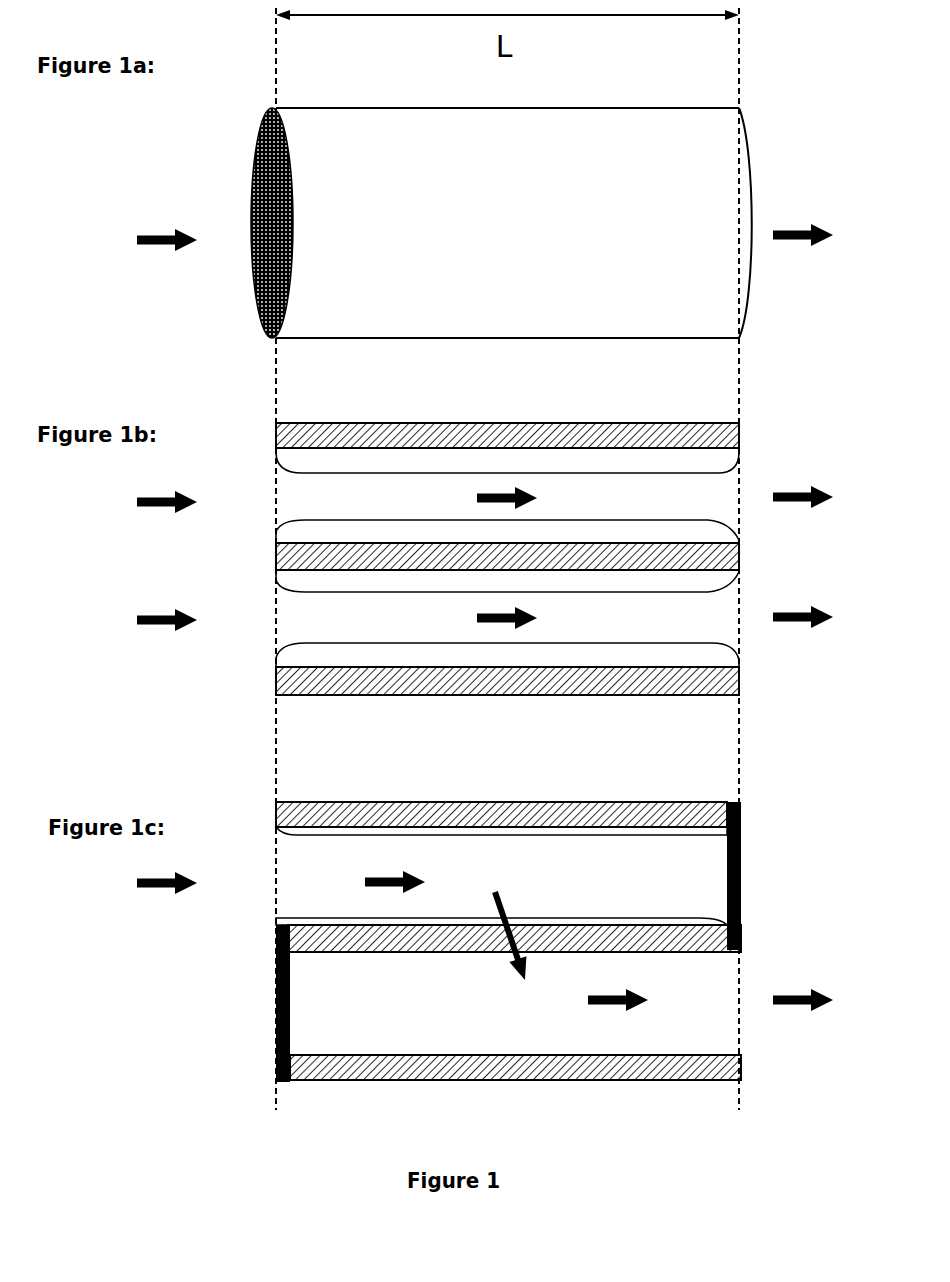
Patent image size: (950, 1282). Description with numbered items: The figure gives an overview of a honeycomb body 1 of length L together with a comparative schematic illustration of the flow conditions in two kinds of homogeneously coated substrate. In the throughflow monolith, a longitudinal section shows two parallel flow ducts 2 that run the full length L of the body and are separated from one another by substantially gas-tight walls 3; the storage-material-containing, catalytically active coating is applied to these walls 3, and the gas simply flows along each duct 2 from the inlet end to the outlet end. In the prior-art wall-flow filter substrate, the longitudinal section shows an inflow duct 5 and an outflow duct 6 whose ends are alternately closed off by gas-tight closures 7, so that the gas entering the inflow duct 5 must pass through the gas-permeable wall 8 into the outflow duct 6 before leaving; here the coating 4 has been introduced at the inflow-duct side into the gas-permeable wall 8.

In FIG. 1A, the honeycomb body 1 is at (501, 223).
In FIG. 1B, the flow ducts 2 is at (457, 560).
In FIG. 1B, the gas-tight walls 3 is at (630, 542).
In FIG. 1B, the coating 4 is at (713, 533).
In FIG. 1C, the coating 4 is at (677, 918).
In FIG. 1C, the inflow duct 5 is at (366, 882).
In FIG. 1C, the outflow duct 6 is at (478, 954).
In FIG. 1C, the gas-tight closures 7 is at (290, 980).
In FIG. 1C, the gas-permeable wall 8 is at (741, 930).